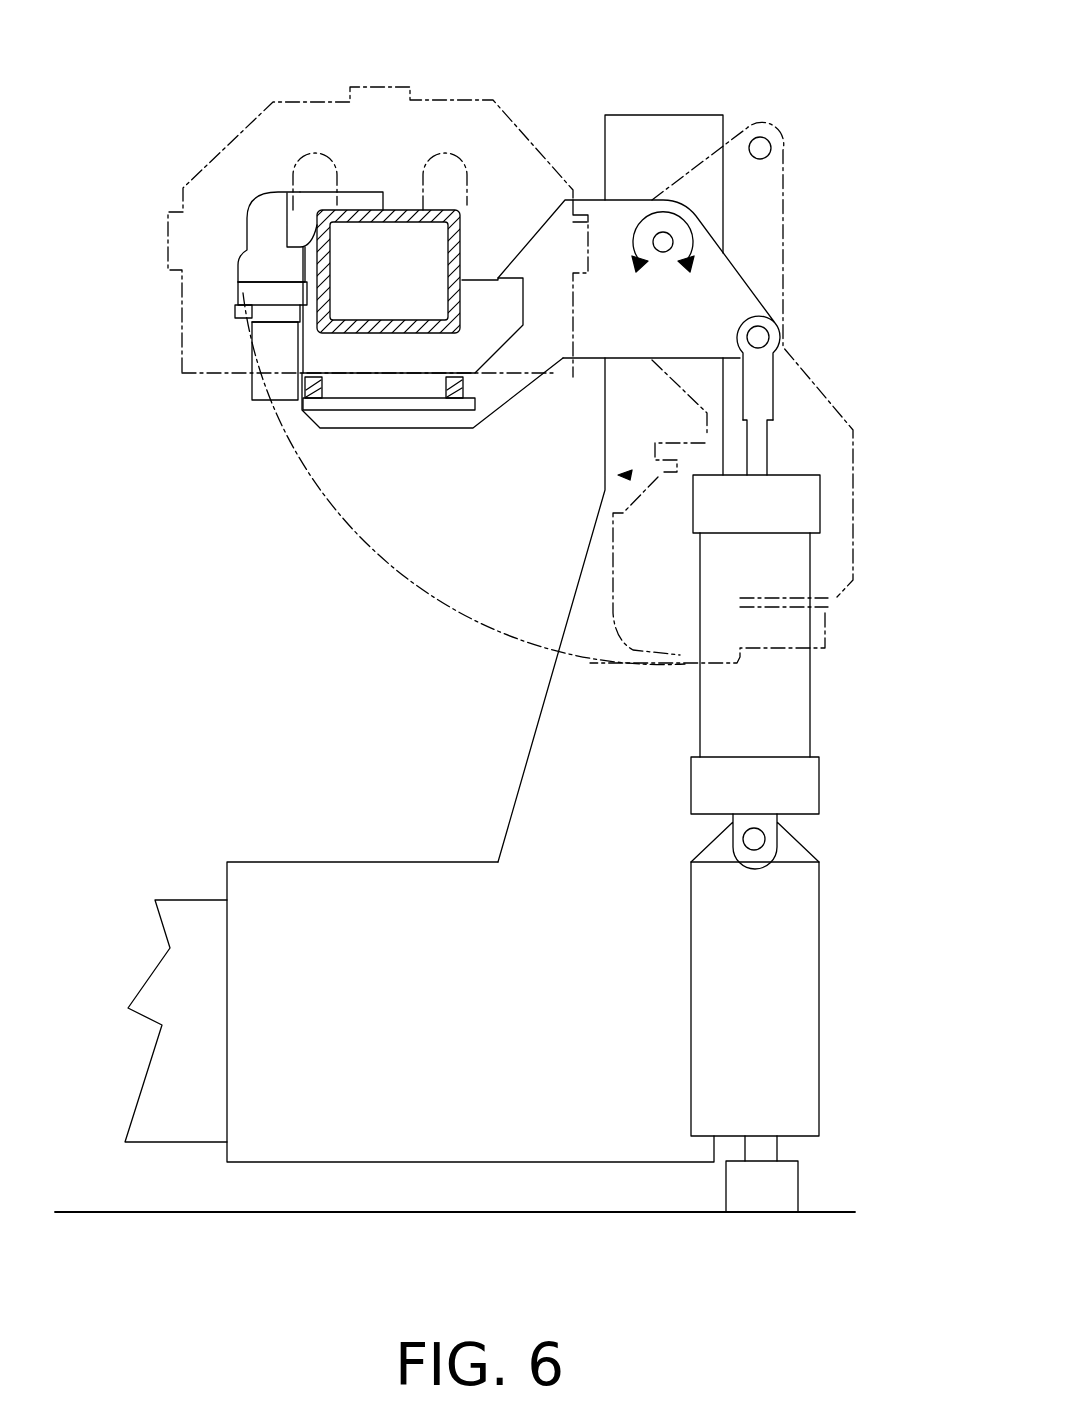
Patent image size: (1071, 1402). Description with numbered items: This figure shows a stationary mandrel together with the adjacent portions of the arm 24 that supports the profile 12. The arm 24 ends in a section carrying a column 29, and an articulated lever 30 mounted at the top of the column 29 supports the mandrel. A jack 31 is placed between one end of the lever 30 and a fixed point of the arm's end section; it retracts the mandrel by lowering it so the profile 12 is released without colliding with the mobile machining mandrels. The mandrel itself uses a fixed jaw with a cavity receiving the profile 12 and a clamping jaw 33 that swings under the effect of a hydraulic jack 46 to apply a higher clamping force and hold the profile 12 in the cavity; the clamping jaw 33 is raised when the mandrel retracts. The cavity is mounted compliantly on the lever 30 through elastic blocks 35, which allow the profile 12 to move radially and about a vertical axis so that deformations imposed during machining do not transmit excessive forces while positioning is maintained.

The profile 12 is at (450, 208).
The arm 24 is at (492, 688).
The column 29 is at (158, 144).
The articulated lever 30 is at (362, 420).
The jack 31 is at (800, 493).
The clamping jaw 33 is at (372, 172).
The elastic blocks 35 is at (465, 385).
The hydraulic jack 46 is at (267, 297).